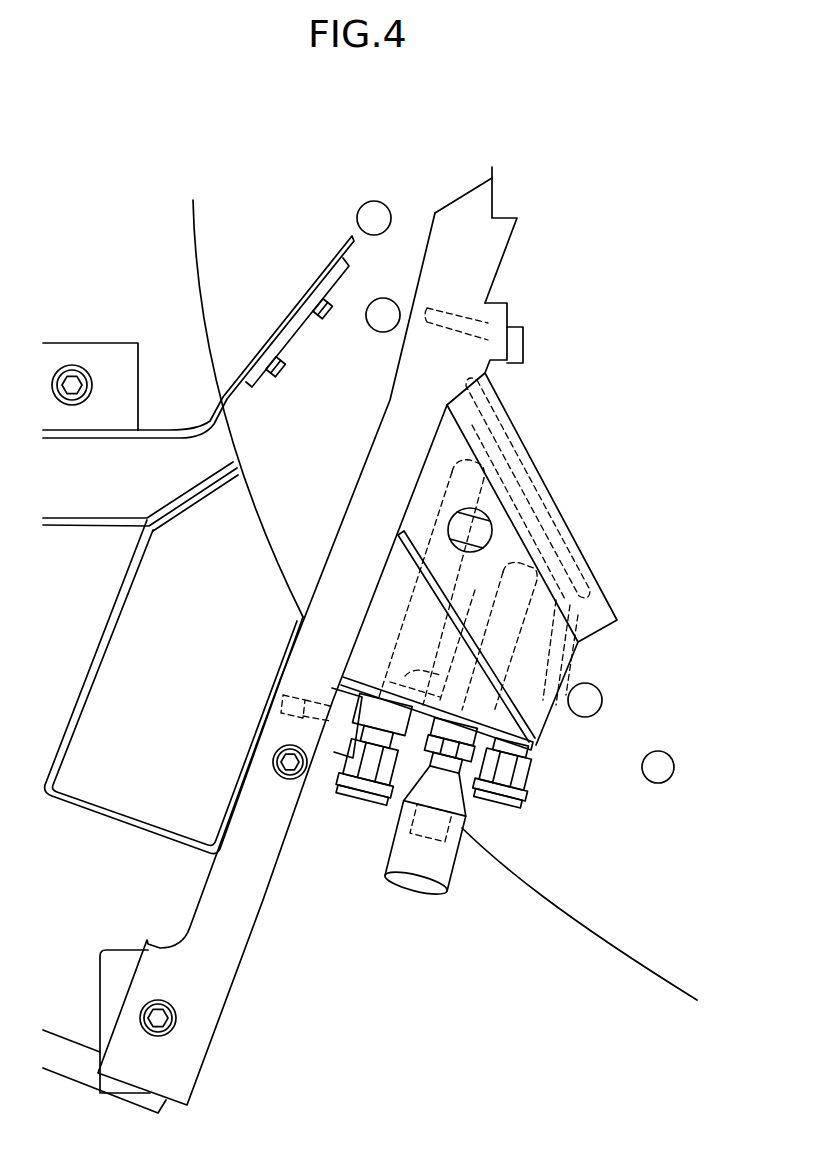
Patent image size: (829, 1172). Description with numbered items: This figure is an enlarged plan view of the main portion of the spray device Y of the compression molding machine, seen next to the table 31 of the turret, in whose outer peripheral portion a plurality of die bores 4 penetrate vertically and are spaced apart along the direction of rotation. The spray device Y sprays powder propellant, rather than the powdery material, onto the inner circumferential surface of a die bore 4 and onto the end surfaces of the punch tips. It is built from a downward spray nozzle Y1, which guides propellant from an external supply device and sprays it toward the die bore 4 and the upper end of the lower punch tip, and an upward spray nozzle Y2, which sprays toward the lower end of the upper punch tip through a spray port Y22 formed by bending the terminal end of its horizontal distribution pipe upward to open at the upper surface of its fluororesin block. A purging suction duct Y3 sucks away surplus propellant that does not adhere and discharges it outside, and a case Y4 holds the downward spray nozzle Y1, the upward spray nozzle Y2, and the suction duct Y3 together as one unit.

The die bore 4 is at (357, 221).
The table 31 is at (197, 297).
The spray device Y is at (548, 471).
The downward spray nozzle Y1 is at (507, 653).
The upward spray nozzle Y2 is at (420, 615).
The spray port Y22 is at (492, 532).
The purging suction duct Y3 is at (452, 862).
The case Y4 is at (549, 716).